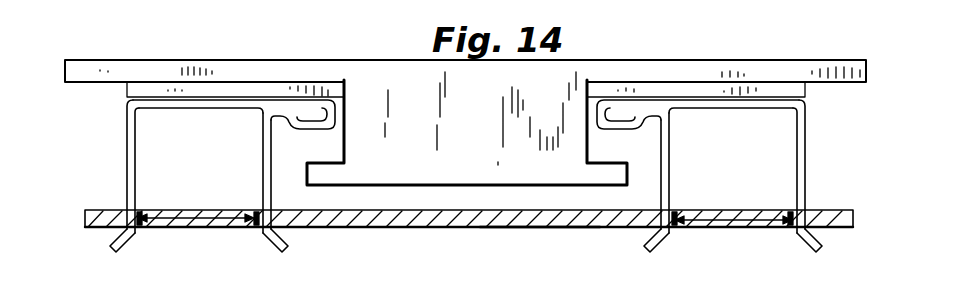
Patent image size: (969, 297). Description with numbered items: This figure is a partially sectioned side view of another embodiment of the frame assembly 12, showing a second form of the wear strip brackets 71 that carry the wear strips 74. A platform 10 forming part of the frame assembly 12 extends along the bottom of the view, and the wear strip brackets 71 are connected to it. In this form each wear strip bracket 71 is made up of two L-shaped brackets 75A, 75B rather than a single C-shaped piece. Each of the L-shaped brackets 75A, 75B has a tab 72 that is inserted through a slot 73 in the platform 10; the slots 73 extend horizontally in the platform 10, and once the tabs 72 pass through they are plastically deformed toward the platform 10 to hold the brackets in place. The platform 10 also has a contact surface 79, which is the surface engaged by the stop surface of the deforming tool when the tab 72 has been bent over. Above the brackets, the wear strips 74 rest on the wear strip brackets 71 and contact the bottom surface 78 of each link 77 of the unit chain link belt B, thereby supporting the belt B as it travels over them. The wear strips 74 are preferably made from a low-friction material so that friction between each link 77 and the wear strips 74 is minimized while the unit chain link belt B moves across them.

The unit chain link belt B is at (148, 59).
The link 77 is at (362, 72).
The wear strip 74 is at (137, 88).
The bottom surface 78 is at (97, 83).
The wear strip bracket 71 is at (133, 138).
The L-shaped bracket 75A is at (127, 158).
The L-shaped bracket 75B is at (262, 189).
The tab 72 is at (118, 242).
The slot 73 is at (235, 226).
The base substrate 10 is at (457, 219).
The frame assembly 12 is at (412, 220).
The contact surface 79 is at (527, 228).